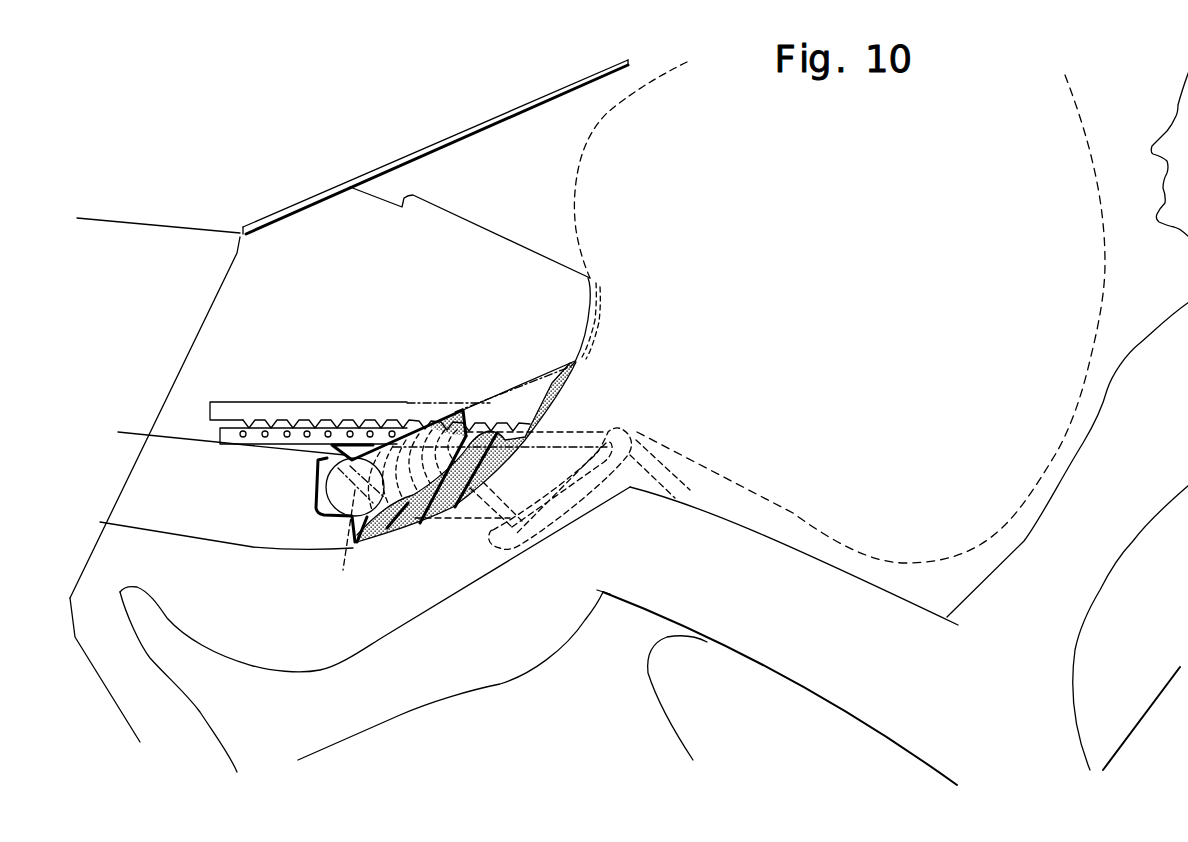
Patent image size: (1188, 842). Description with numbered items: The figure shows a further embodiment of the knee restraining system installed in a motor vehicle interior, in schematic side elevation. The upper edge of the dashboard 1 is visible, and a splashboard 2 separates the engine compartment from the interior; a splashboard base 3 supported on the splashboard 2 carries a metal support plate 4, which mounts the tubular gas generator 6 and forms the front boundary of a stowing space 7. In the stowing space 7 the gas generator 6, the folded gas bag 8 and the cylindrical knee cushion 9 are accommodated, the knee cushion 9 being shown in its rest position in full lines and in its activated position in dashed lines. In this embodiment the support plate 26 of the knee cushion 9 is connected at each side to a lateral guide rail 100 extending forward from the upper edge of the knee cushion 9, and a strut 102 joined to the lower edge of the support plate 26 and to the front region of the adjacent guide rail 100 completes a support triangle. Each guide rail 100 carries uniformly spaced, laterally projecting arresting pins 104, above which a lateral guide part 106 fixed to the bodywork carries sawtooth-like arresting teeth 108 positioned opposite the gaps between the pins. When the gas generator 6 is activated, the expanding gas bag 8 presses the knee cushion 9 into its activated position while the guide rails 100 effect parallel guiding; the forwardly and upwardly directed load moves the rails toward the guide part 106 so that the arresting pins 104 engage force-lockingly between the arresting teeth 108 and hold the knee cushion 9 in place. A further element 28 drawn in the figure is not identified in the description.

The upper edge of the dashboard 1 is at (593, 282).
The splashboard 2 is at (192, 347).
The splashboard base 3 is at (173, 440).
The metal support plate 4 is at (315, 501).
The tubular gas generator 6 is at (333, 503).
The stowing space 7 is at (495, 395).
The folded gas bag 8 is at (576, 180).
The knee cushion 9 is at (510, 455).
The support plate of the knee cushion 26 is at (382, 537).
The guide rods 28 is at (420, 530).
The lateral guide rail 100 is at (337, 430).
The strut 102 is at (492, 536).
The arresting pins 104 is at (391, 430).
The lateral guide part 106 is at (278, 413).
The arresting teeth 108 is at (292, 441).